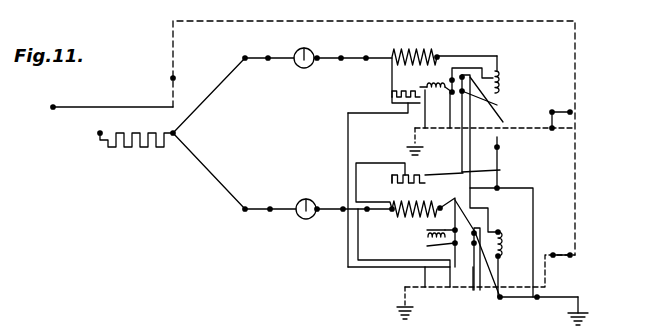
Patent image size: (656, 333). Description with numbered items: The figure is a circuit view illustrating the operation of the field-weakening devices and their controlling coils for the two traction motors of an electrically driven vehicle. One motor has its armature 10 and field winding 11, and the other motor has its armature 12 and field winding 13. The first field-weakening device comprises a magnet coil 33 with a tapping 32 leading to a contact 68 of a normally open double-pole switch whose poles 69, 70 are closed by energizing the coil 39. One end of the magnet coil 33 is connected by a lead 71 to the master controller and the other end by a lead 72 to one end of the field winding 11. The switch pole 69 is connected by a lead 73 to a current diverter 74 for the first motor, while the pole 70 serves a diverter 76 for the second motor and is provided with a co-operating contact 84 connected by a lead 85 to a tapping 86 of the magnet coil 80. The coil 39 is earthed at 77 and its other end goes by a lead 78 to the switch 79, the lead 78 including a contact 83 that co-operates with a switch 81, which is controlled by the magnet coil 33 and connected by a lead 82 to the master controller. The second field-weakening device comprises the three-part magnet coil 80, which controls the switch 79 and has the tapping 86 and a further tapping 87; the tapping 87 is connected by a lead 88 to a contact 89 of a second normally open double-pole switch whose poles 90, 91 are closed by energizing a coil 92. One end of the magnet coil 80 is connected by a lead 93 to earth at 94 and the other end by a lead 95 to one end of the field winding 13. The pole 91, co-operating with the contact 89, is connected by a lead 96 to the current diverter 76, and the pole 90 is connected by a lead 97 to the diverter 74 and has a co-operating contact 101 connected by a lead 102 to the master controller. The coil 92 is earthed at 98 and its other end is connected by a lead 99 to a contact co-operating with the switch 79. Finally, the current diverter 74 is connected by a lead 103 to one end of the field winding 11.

The armature 10 is at (300, 49).
The field winding 11 is at (415, 46).
The armature 12 is at (302, 199).
The field winding 13 is at (403, 213).
The tapping 32 is at (499, 78).
The magnet coil 33 is at (498, 67).
The coil 39 is at (424, 86).
The contact 68 is at (452, 78).
The switch pole 69 is at (450, 93).
The switch pole 70 is at (498, 103).
The lead 71 is at (499, 141).
The lead 72 is at (470, 55).
The lead 73 is at (423, 90).
The current diverter 74 is at (395, 98).
The current diverter 76 is at (392, 175).
The earth 77 is at (422, 144).
The lead 78 is at (578, 151).
The switch 79 is at (561, 262).
The magnet coil 80 is at (503, 250).
The switch 81 is at (572, 113).
The lead 82 is at (577, 41).
The contact 83 is at (547, 99).
The contact 84 is at (494, 97).
The lead 85 is at (494, 170).
The tapping 86 is at (502, 228).
The tapping 87 is at (500, 263).
The lead 88 is at (500, 299).
The contact 89 is at (455, 205).
The switch pole 90 is at (427, 246).
The switch pole 91 is at (480, 287).
The coil 92 is at (424, 234).
The lead 93 is at (537, 299).
The earth 94 is at (583, 310).
The lead 95 is at (533, 204).
The lead 96 is at (392, 272).
The lead 97 is at (348, 235).
The earth 98 is at (418, 312).
The lead 99 is at (553, 254).
The contact 101 is at (380, 186).
The lead 102 is at (515, 189).
The lead 103 is at (392, 76).